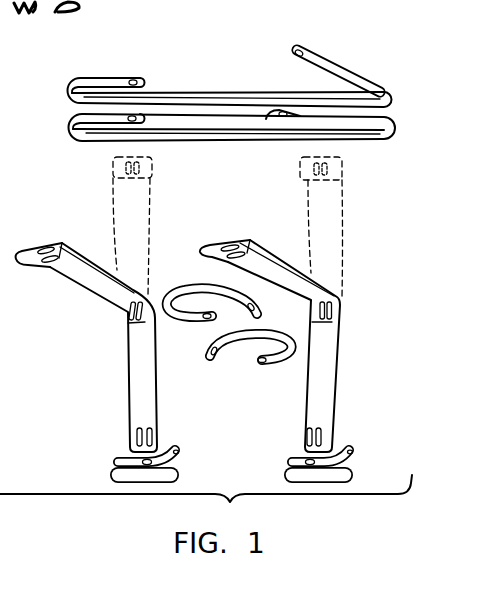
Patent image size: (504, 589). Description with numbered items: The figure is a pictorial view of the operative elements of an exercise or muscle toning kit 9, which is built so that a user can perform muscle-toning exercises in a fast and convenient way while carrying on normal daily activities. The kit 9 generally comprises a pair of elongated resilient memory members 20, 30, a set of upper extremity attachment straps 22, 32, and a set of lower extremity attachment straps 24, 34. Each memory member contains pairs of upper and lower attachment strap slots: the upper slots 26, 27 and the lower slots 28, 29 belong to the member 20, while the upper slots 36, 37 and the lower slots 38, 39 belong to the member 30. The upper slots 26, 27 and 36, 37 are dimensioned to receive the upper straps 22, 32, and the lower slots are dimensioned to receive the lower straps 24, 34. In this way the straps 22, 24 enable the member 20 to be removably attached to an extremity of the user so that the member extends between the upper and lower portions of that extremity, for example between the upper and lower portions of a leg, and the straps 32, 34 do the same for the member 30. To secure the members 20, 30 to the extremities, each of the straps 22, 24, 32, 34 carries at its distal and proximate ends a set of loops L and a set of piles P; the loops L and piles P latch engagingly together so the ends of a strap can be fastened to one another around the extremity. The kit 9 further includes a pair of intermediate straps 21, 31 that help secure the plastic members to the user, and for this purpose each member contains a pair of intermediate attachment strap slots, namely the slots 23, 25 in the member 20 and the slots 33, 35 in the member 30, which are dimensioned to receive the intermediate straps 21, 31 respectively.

The exercise kit 9 is at (300, 495).
The elongated resilient memory member 20 is at (330, 388).
The intermediate strap 21 is at (285, 378).
The upper extremity attachment strap 22 is at (384, 92).
The intermediate attachment strap slot 23 is at (326, 318).
The lower extremity attachment strap 24 is at (291, 466).
The intermediate attachment strap slot 25 is at (340, 302).
The upper attachment strap slot 26 is at (298, 168).
The upper attachment strap slot 27 is at (340, 180).
The lower attachment strap slot 28 is at (306, 436).
The lower attachment strap slot 29 is at (331, 432).
The elongated resilient memory member 30 is at (132, 382).
The intermediate strap 31 is at (213, 288).
The upper extremity attachment strap 32 is at (386, 133).
The intermediate attachment strap slot 33 is at (125, 310).
The lower extremity attachment strap 34 is at (114, 464).
The intermediate attachment strap slot 35 is at (128, 328).
The upper attachment strap slot 36 is at (113, 166).
The upper attachment strap slot 37 is at (152, 176).
The lower attachment strap slot 38 is at (136, 431).
The lower attachment strap slot 39 is at (153, 431).
The loops L is at (139, 77).
The piles P is at (302, 50).